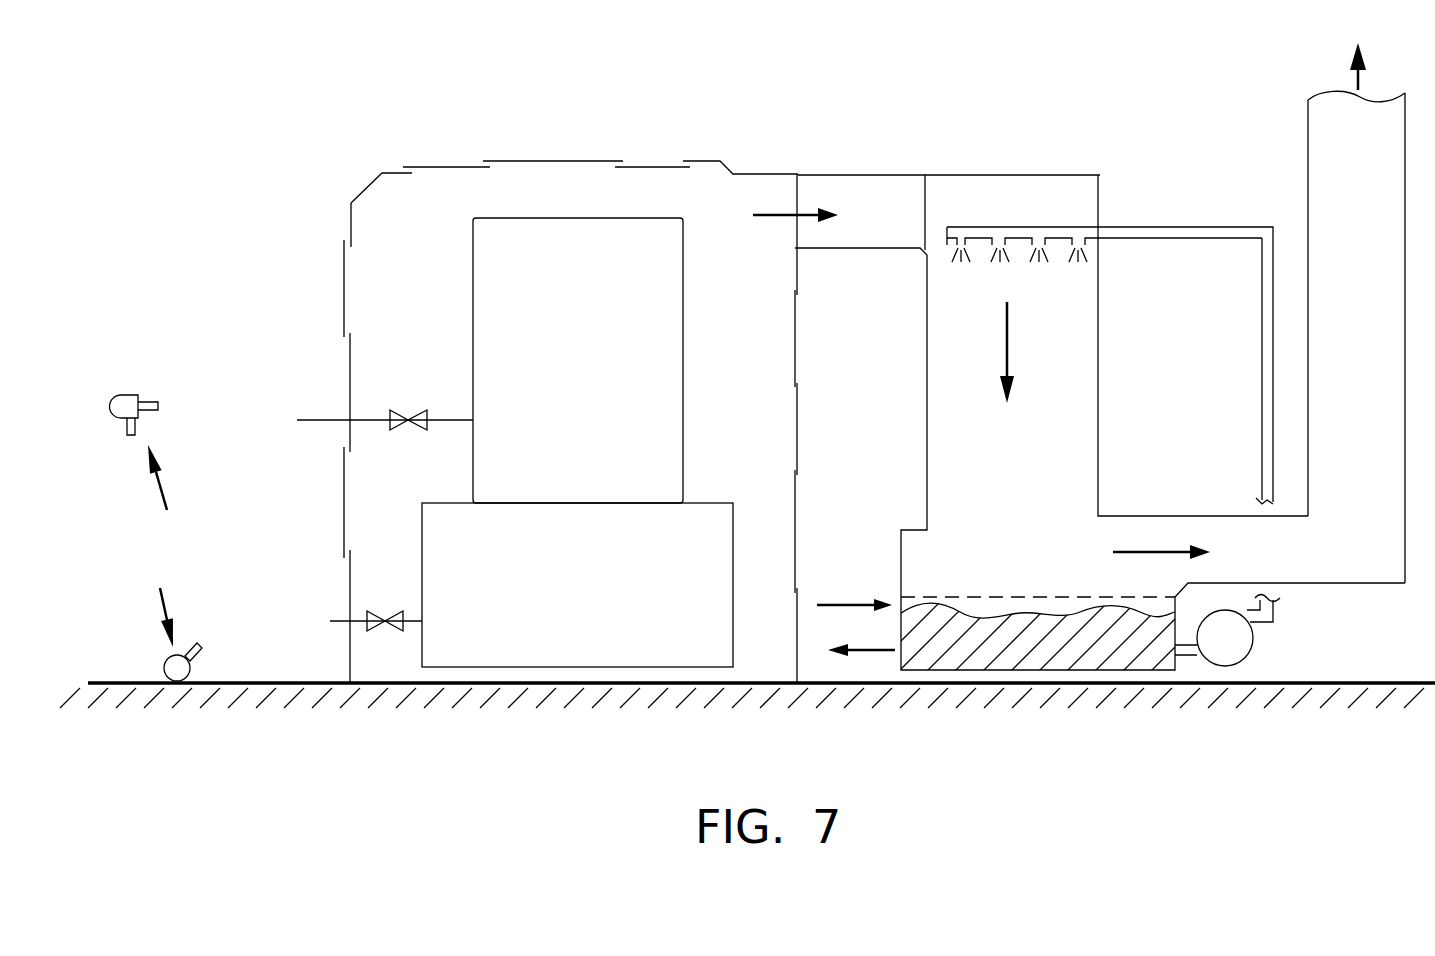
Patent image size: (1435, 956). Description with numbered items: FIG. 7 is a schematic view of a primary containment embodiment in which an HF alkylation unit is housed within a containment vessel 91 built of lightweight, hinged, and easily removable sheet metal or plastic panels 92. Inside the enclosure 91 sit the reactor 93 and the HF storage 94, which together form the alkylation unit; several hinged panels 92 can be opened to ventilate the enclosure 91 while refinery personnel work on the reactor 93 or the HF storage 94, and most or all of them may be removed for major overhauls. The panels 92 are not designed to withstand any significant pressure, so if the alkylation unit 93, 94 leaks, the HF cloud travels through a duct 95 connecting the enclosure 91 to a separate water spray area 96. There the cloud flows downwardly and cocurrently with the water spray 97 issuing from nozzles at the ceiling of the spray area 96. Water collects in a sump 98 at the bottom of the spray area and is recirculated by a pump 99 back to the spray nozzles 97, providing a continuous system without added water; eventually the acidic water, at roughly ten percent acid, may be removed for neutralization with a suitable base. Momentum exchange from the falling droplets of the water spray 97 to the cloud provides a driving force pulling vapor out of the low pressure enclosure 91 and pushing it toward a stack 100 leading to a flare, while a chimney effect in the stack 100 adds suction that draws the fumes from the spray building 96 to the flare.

The containment vessel 91 is at (566, 138).
The panels 92 is at (343, 295).
The reactor 93 is at (578, 360).
The HF storage 94 is at (577, 585).
The duct 95 is at (890, 212).
The water spray area 96 is at (1151, 367).
The water spray 97 is at (1013, 242).
The sump 98 is at (1046, 635).
The pump 99 is at (1278, 646).
The stack 100 is at (1356, 313).